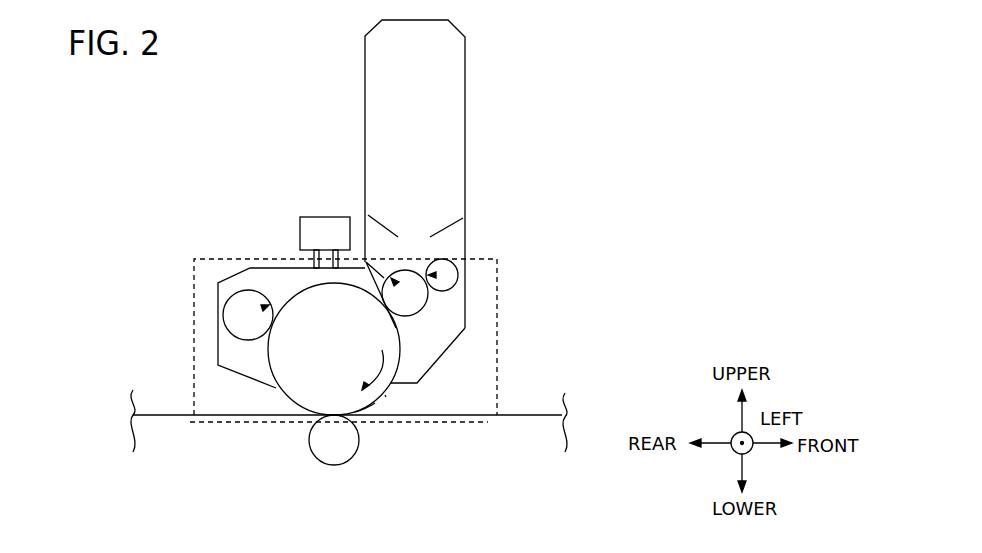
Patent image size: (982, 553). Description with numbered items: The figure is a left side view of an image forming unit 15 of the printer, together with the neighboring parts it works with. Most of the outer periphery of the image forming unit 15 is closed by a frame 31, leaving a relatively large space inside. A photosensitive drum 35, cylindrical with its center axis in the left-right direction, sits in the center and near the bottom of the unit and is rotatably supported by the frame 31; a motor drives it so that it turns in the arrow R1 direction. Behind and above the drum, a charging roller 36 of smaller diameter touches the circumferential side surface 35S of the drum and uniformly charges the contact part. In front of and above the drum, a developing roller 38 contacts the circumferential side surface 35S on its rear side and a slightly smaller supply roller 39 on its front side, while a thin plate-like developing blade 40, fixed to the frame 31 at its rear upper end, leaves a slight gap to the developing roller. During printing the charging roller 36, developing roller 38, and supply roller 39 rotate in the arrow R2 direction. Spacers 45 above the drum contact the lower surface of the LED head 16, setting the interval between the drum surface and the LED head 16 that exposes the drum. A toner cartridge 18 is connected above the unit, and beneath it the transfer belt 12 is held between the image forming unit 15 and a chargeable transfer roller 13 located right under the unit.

The transfer belt 12 is at (510, 416).
The transfer roller 13 is at (316, 458).
The image forming unit 15 is at (208, 424).
The LED head 16 is at (323, 217).
The toner cartridge 18 is at (466, 80).
The frame 31 is at (218, 366).
The photosensitive drum 35 is at (288, 398).
The circumferential side surface 35S is at (380, 405).
The charging roller 36 is at (232, 298).
The developing roller 38 is at (421, 311).
The supply roller 39 is at (457, 282).
The developing blade 40 is at (378, 266).
The spacer 45 is at (300, 258).
The arrow R1 direction R1 is at (385, 395).
The arrow R2 direction R2 is at (268, 305).